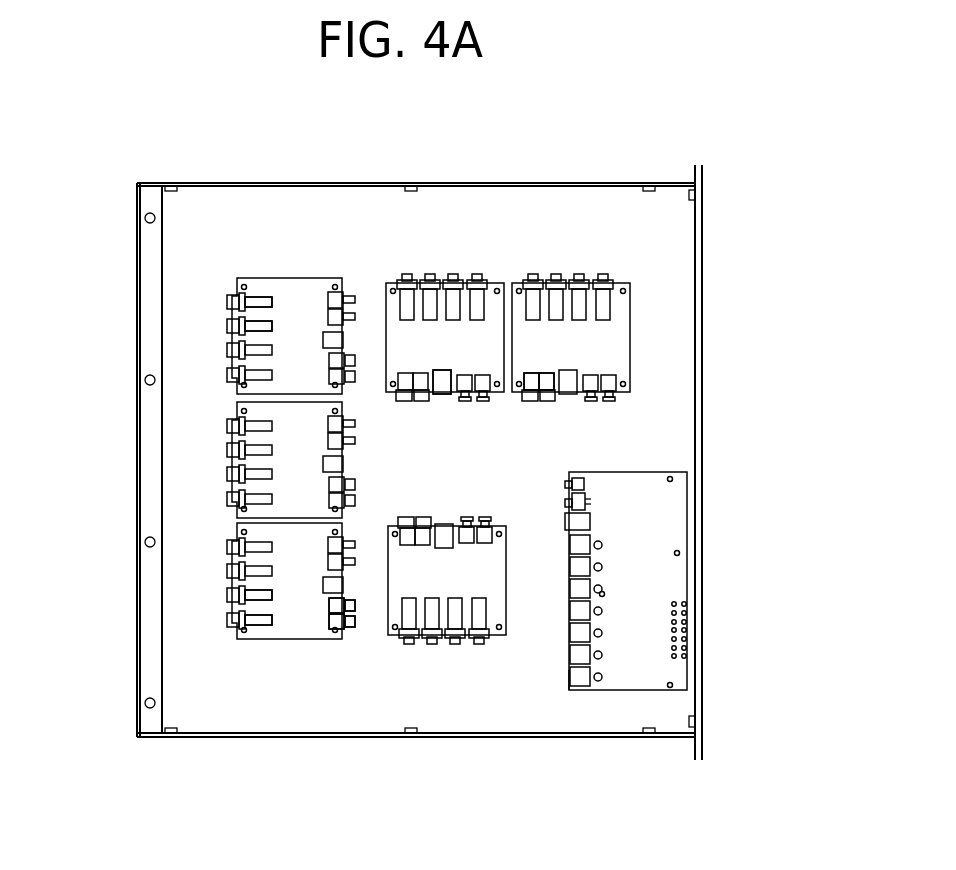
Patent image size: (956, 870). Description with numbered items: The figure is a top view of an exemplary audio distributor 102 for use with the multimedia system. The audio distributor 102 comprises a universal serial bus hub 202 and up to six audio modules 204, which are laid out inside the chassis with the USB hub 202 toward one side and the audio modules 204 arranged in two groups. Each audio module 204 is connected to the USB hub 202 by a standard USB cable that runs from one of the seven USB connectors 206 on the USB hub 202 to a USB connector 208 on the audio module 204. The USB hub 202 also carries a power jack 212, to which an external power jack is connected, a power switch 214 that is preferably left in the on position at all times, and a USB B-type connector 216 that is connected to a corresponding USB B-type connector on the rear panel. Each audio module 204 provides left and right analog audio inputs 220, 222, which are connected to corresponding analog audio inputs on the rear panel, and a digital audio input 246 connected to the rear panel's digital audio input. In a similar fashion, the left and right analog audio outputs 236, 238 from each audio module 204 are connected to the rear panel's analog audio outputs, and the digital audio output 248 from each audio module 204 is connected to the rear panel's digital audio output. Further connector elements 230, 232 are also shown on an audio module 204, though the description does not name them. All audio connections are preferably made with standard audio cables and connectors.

The audio distributor 102 is at (206, 182).
The audio module 204 is at (443, 342).
The USB hub 202 is at (648, 572).
The USB connector 206 is at (568, 675).
The USB connector 208 is at (443, 397).
The power jack 212 is at (564, 484).
The power switch 214 is at (567, 503).
The USB B-type connector 216 is at (592, 522).
The left analog audio input 220 is at (273, 595).
The right analog audio input 222 is at (273, 620).
The connector pin 230 is at (359, 627).
The connector pin 232 is at (358, 606).
The left analog audio output 236 is at (273, 324).
The right analog audio output 238 is at (277, 302).
The digital audio input 246 is at (532, 378).
The digital audio output 248 is at (547, 378).